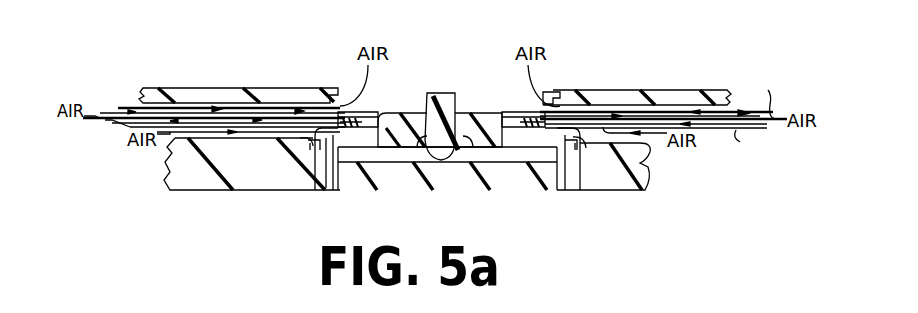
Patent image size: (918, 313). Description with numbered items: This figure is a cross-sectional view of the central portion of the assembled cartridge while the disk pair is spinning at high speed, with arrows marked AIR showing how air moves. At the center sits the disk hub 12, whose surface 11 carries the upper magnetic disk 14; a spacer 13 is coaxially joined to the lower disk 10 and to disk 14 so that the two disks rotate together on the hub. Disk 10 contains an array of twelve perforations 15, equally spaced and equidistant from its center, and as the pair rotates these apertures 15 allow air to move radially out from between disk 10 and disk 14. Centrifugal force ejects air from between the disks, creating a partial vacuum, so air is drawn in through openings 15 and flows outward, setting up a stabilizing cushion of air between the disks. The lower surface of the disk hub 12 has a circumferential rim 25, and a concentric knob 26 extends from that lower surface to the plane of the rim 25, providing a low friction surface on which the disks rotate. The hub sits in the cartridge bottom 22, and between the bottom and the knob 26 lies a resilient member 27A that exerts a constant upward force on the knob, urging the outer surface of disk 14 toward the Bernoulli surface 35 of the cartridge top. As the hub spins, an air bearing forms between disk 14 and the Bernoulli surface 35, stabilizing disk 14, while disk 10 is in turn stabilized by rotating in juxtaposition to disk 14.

The disk 10 is at (110, 124).
The surface 11 is at (314, 157).
The disk hub 12 is at (490, 112).
The spacer 13 is at (355, 113).
The upper magnetic disk 14 is at (132, 112).
The perforations 15 is at (307, 146).
The cartridge bottom 22 is at (262, 190).
The circumferential rim 25 is at (335, 192).
The concentric knob 26 is at (429, 111).
The resilient member 27A is at (460, 175).
The Bernoulli surface 35 is at (280, 88).